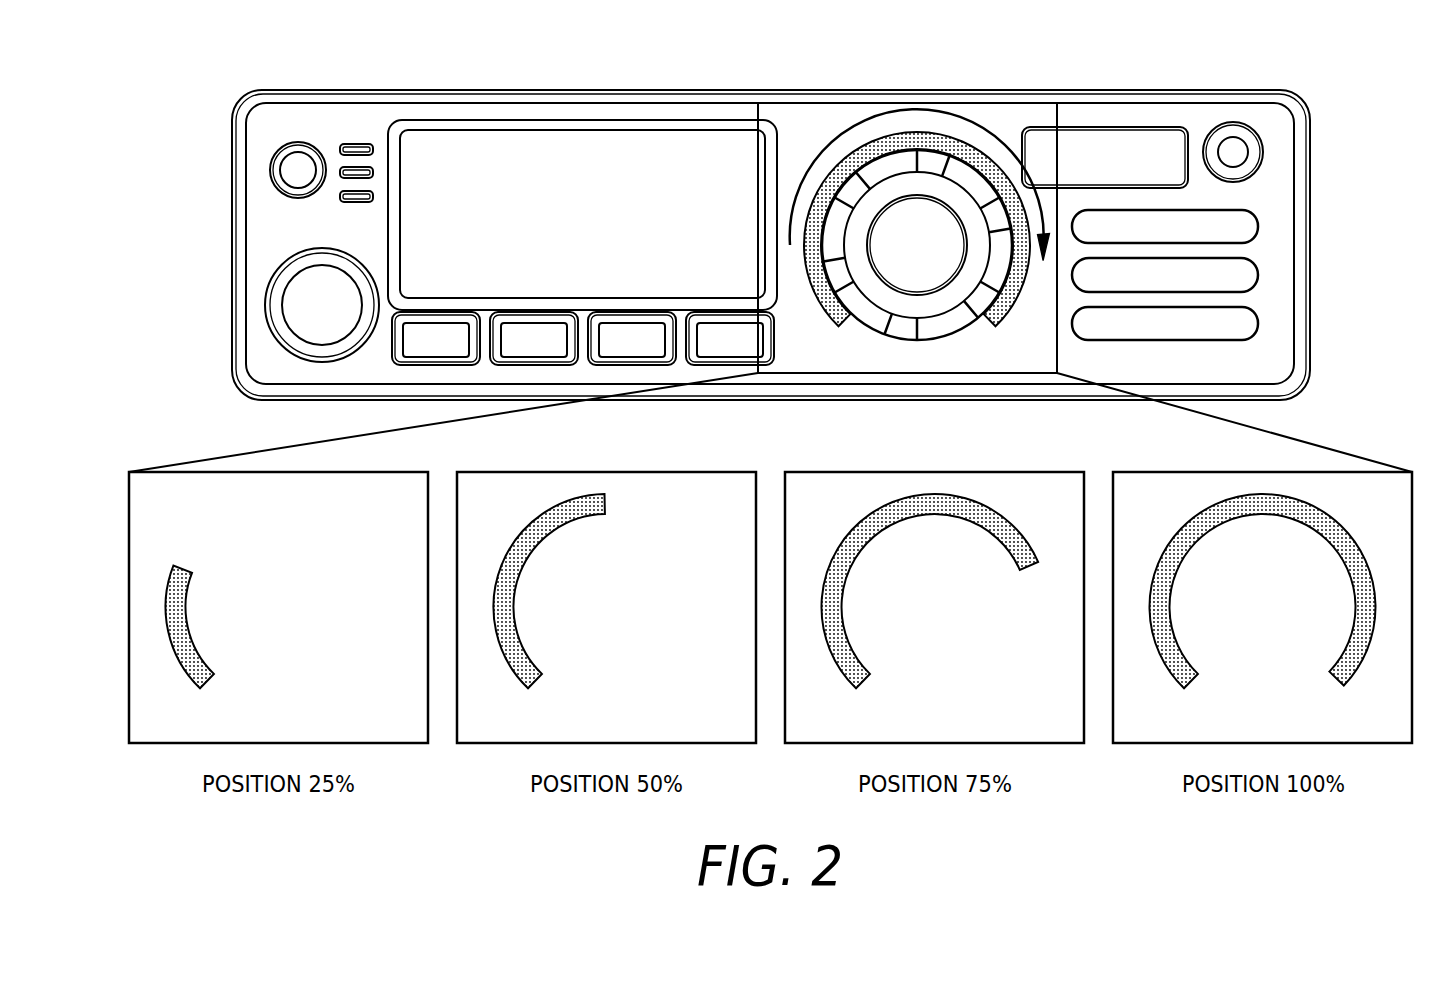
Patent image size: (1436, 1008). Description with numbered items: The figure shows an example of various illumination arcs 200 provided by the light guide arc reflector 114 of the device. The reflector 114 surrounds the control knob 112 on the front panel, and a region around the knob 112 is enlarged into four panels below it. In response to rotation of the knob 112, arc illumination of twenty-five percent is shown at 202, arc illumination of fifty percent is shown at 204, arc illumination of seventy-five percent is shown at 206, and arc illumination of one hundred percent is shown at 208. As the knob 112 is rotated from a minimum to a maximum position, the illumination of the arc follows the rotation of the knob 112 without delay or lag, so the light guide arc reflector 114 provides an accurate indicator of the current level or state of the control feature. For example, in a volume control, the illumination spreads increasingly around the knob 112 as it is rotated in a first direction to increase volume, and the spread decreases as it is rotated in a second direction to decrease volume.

The illumination arcs 200 is at (771, 220).
The knob 112 is at (917, 245).
The light guide arc reflector 114 is at (922, 135).
The arc illumination of 25% 202 is at (129, 743).
The arc illumination of 50% 204 is at (457, 743).
The arc illumination of 75% 206 is at (785, 743).
The arc illumination of 100% 208 is at (1113, 743).